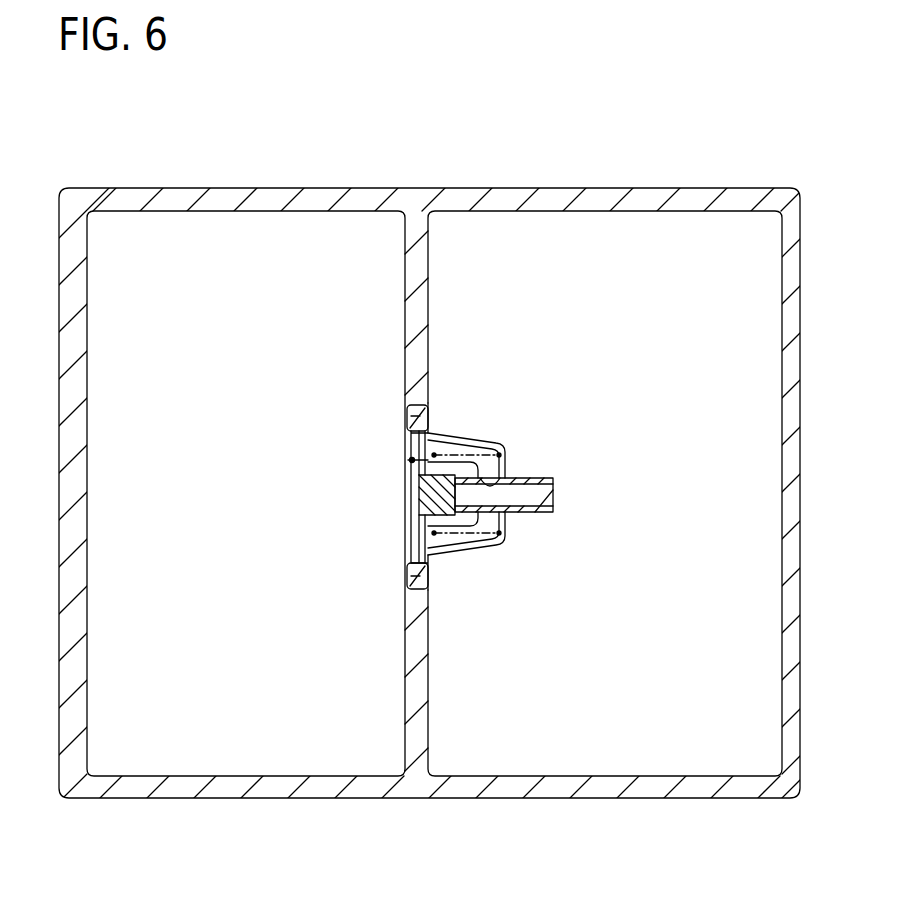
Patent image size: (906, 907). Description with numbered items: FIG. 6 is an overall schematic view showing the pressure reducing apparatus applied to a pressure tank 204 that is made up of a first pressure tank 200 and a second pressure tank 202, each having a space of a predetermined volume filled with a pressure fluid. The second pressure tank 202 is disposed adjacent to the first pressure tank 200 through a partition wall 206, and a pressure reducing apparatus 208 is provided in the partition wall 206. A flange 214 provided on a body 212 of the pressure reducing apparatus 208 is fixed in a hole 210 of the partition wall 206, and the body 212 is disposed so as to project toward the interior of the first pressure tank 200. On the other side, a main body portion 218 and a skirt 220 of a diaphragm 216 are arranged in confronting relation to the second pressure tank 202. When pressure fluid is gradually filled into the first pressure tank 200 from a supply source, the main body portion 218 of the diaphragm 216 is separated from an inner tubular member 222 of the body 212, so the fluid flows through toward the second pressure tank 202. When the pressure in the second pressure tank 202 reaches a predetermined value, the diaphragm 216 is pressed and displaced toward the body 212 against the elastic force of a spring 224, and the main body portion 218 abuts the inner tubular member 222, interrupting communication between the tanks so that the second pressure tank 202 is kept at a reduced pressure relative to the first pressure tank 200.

The first pressure tank 200 is at (613, 740).
The second pressure tank 202 is at (283, 738).
The pressure tank 204 is at (730, 188).
The partition wall 206 is at (415, 647).
The pressure reducing apparatus 208 is at (490, 440).
The hole 210 is at (410, 427).
The body 212 is at (480, 547).
The flange 214 is at (410, 580).
The diaphragm 216 is at (412, 460).
The main body portion 218 is at (423, 503).
The skirt 220 is at (425, 449).
The inner tubular member 222 is at (487, 487).
The spring 224 is at (440, 455).